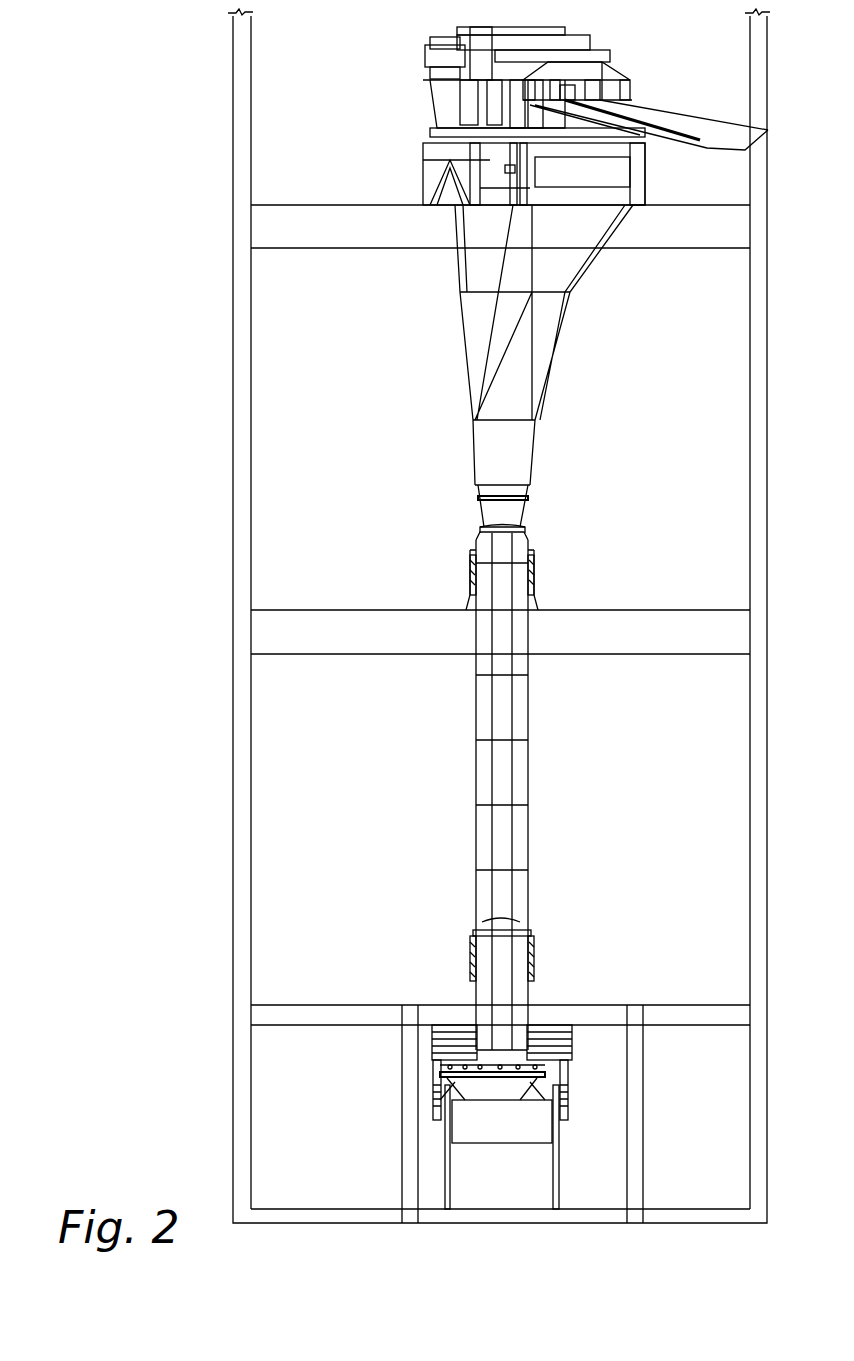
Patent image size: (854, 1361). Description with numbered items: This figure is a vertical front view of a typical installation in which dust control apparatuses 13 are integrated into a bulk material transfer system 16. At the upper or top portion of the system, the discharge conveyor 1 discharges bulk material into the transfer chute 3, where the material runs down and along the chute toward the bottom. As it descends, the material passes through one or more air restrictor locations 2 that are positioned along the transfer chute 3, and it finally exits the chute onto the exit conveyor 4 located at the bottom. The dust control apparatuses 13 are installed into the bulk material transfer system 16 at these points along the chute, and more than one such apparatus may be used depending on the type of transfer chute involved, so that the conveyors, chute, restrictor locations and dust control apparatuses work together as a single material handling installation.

The discharge conveyor 1 is at (690, 113).
The air restrictor location 2 is at (552, 548).
The transfer chute 3 is at (557, 795).
The exit conveyor 4 is at (565, 1070).
The dust control apparatus 13 is at (542, 589).
The bulk material transfer system 16 is at (462, 562).